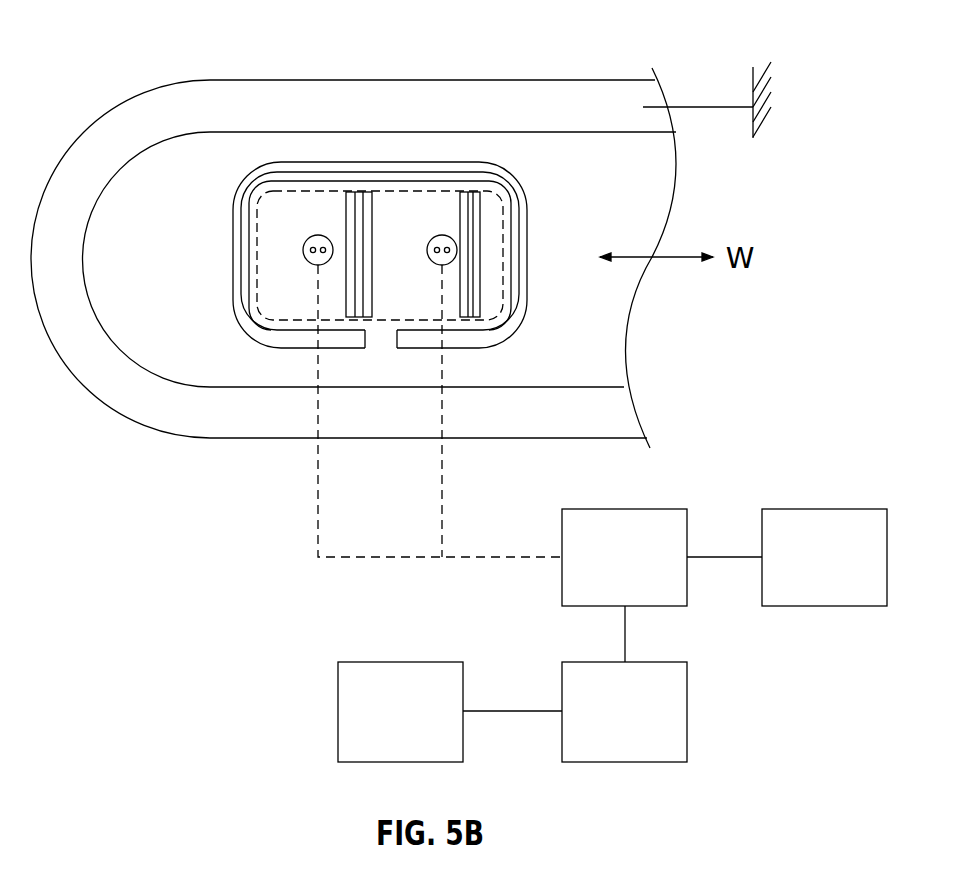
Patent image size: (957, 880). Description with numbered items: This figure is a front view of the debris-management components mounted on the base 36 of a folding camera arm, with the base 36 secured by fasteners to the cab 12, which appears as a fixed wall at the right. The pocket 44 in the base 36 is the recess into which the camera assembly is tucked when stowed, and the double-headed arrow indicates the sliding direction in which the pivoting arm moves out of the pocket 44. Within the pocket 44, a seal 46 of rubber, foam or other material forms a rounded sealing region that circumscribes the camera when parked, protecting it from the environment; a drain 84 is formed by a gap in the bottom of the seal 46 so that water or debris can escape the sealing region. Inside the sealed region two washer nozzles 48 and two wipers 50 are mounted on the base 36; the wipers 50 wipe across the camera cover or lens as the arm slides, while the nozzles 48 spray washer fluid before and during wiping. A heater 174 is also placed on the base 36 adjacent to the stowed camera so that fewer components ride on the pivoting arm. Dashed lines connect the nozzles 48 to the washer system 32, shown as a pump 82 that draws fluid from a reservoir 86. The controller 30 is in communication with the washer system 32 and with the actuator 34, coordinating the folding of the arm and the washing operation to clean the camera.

The cab 12 is at (752, 89).
The base 36 is at (543, 80).
The pocket 44 is at (660, 170).
The seal 46 is at (235, 305).
The washer nozzle 48 is at (304, 245).
The wiper 50 is at (368, 197).
The heater 174 is at (281, 319).
The drain 84 is at (368, 333).
The washer system 32 is at (725, 544).
The pump 82 is at (640, 607).
The reservoir 86 is at (824, 577).
The controller 30 is at (610, 726).
The actuator 34 is at (393, 661).